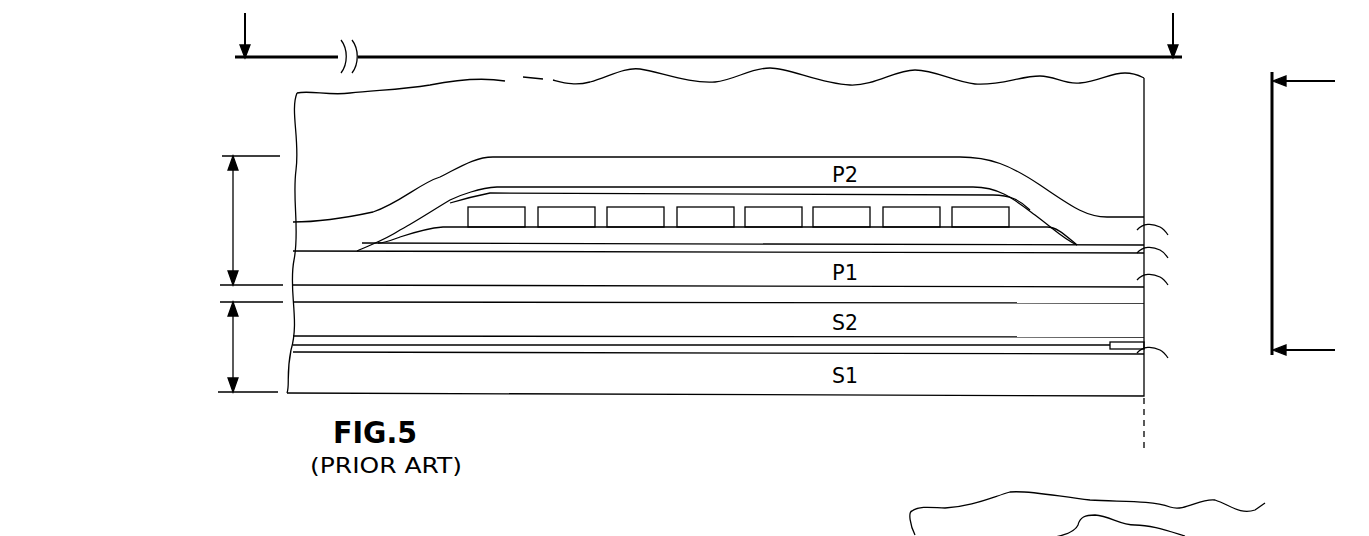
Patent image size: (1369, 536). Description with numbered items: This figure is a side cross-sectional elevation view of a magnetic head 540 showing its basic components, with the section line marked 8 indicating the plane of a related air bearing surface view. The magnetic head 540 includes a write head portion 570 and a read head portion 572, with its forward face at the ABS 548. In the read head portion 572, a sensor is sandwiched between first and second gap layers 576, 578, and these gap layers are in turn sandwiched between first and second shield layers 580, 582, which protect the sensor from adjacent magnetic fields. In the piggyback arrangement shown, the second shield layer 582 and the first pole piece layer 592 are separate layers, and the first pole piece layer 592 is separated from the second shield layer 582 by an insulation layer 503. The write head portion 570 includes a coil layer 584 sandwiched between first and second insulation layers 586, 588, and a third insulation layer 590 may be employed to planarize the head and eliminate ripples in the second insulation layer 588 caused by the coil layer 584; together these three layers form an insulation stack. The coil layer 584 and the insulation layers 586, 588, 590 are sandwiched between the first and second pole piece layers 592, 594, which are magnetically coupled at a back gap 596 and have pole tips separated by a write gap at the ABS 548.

The section line 8- 8 is at (788, 186).
The magnetic head 540 is at (268, 103).
The ABS 548 is at (1145, 445).
The write head portion 570 is at (230, 225).
The read head portion 572 is at (230, 352).
The insulation layer 503 is at (598, 298).
The first gap layer 576 is at (790, 354).
The second gap layer 578 is at (752, 336).
The first shield layer 580 is at (922, 378).
The second shield layer 582 is at (990, 325).
The coil layer 584 is at (768, 212).
The first insulation layer 586 is at (673, 237).
The second insulation layer 588 is at (1023, 218).
The third insulation layer 590 is at (536, 190).
The first pole piece layer 592 is at (1057, 278).
The second pole piece layer 594 is at (916, 170).
The back gap 596 is at (330, 220).